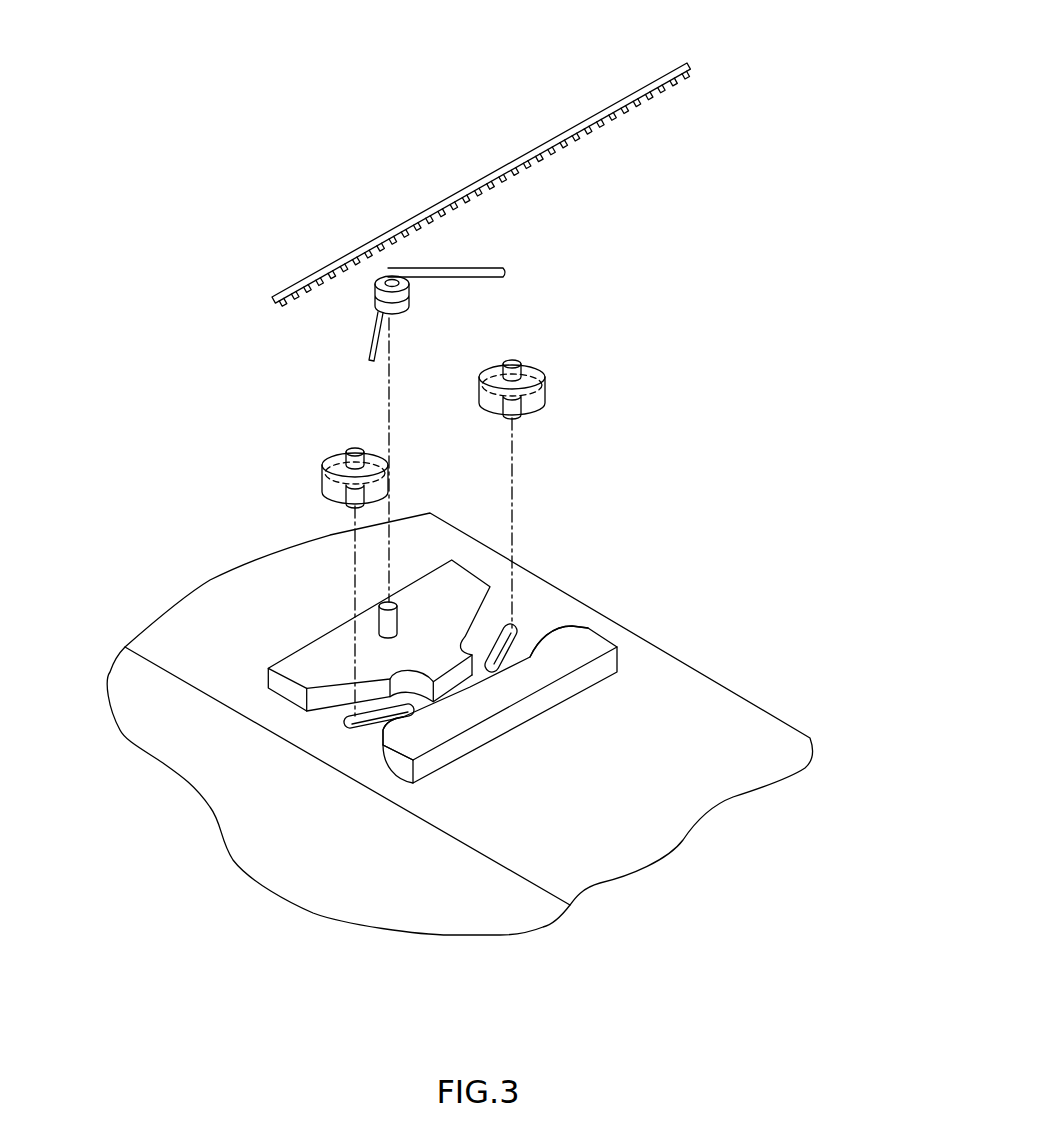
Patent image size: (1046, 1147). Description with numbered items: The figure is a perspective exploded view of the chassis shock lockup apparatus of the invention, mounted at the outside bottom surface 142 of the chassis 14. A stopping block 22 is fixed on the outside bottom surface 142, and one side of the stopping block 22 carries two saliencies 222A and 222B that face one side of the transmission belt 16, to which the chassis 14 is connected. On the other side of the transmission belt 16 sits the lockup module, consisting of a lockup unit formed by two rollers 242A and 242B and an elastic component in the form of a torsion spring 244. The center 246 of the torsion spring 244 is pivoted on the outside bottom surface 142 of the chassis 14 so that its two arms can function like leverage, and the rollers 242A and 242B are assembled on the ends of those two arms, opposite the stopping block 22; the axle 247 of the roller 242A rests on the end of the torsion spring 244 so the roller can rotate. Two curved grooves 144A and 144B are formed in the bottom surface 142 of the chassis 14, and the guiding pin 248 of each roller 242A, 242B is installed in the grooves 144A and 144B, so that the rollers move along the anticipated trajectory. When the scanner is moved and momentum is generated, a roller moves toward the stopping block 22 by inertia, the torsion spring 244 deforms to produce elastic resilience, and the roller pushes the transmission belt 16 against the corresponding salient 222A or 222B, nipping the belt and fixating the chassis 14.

The chassis 14 is at (360, 877).
The outside bottom surface 142 is at (683, 693).
The curved groove 144A is at (507, 633).
The curved groove 144B is at (400, 712).
The transmission belt 16 is at (578, 123).
The stopping block 22 is at (540, 702).
The salient 222A is at (558, 637).
The salient 222B is at (395, 733).
The roller 242A is at (540, 374).
The roller 242B is at (328, 459).
The torsion spring 244 is at (463, 272).
The center of the torsion spring 246 is at (384, 272).
The axle 247 is at (510, 363).
The guiding pin 248 is at (517, 418).